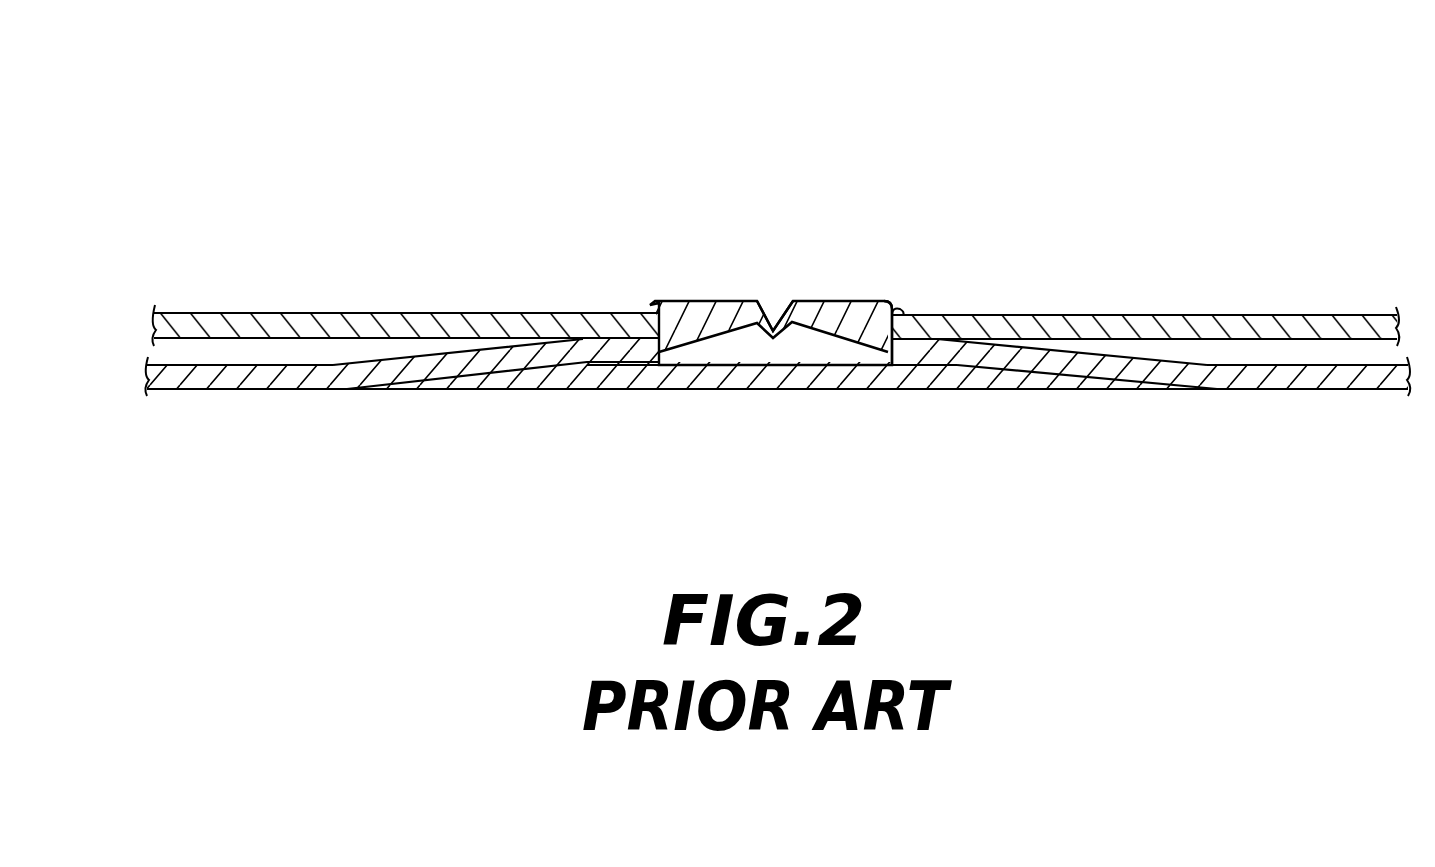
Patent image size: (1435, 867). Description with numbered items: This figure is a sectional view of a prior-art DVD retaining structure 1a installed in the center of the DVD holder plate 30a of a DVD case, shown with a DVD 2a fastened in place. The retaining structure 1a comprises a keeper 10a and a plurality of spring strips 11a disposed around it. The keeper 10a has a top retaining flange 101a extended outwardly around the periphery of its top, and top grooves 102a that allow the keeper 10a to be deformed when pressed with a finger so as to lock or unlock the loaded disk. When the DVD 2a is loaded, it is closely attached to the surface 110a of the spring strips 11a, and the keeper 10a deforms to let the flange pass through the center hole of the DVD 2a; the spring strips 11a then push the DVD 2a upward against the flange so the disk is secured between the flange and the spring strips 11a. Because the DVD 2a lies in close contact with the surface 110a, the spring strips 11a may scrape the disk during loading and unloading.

The DVD retaining structure 1a is at (815, 190).
The DVD 2a is at (1257, 327).
The keeper 10a is at (833, 313).
The top retaining flange 101a is at (897, 307).
The top grooves 102a is at (775, 305).
The surface of the spring strips 110a is at (630, 337).
The spring strips 11a is at (472, 362).
The DVD holder plate 30a is at (982, 378).